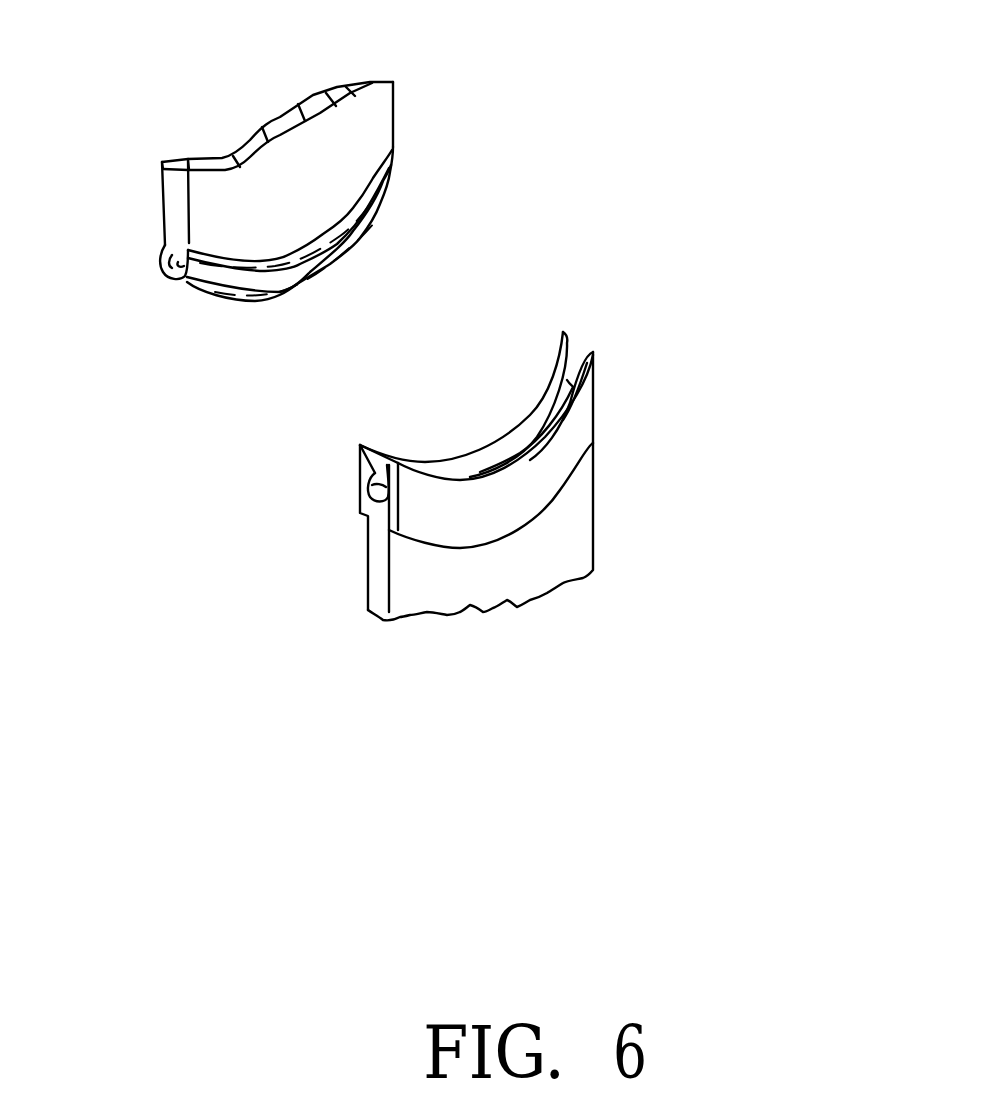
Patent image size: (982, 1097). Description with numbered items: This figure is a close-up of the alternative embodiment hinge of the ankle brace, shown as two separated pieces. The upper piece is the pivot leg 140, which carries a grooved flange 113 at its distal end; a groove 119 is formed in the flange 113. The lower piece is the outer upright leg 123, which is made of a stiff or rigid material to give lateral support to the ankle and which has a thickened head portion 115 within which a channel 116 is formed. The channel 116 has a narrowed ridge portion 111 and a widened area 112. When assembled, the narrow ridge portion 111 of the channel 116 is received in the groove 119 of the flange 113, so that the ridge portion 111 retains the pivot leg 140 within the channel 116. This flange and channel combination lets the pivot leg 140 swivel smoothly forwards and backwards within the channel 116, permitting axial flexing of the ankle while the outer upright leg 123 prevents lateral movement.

The pivot leg 140 is at (393, 93).
The groove 119 is at (163, 247).
The grooved flange 113 is at (170, 273).
The thickened head portion 115 is at (590, 400).
The outer upright leg 123 is at (580, 523).
The narrowed ridge portion 111 is at (383, 468).
The channel 116 is at (360, 495).
The widened area 112 is at (362, 513).